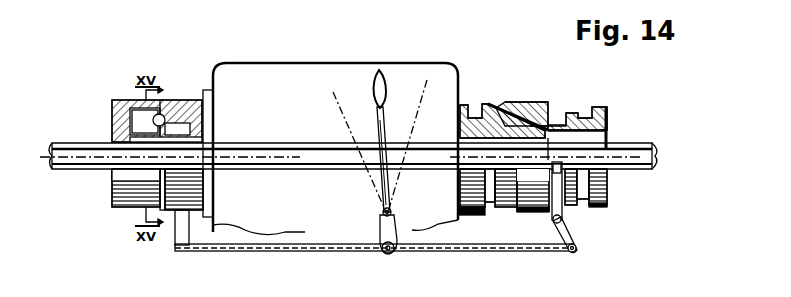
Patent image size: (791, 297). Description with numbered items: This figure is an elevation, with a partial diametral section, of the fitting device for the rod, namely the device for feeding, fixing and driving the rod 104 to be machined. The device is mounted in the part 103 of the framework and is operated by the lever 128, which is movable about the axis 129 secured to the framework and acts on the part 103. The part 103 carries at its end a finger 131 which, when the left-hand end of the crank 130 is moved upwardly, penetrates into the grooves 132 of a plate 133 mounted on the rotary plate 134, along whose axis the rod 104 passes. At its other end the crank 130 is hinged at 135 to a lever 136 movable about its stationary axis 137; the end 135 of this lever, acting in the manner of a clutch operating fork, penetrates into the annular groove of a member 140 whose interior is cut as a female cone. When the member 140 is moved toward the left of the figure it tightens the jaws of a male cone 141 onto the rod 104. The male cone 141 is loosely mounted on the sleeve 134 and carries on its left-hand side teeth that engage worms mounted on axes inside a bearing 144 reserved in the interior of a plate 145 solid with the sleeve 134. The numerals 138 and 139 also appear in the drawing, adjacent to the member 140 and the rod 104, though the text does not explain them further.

The part of the framework 103 is at (410, 70).
The rod 104 is at (78, 148).
The lever 128 is at (383, 163).
The axis 129 is at (383, 212).
The crank 130 is at (290, 247).
The finger 131 is at (183, 232).
The grooves 132 is at (196, 178).
The plate 133 is at (181, 100).
The rotary plate 134 is at (208, 118).
The hinge 135 is at (576, 252).
The lever 136 is at (561, 196).
The stationary axis 137 is at (553, 219).
The flange 138 is at (586, 150).
The clutch member 139 is at (557, 118).
The member 140 is at (532, 108).
The male cone 141 is at (494, 118).
The bearing 144 is at (137, 118).
The plate 145 is at (122, 178).